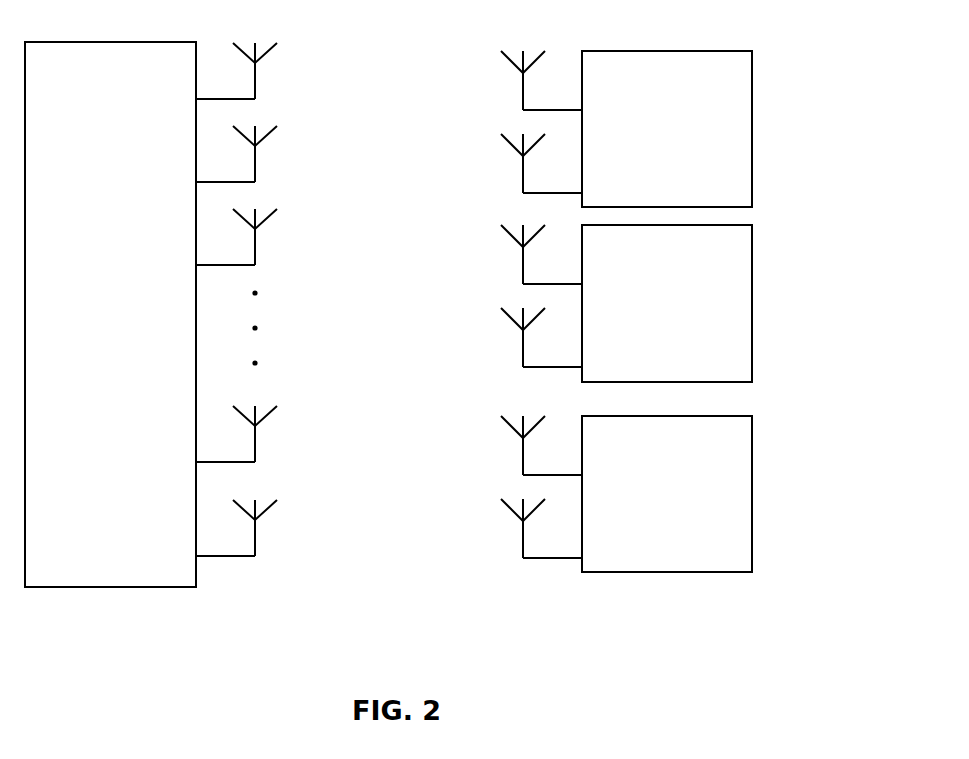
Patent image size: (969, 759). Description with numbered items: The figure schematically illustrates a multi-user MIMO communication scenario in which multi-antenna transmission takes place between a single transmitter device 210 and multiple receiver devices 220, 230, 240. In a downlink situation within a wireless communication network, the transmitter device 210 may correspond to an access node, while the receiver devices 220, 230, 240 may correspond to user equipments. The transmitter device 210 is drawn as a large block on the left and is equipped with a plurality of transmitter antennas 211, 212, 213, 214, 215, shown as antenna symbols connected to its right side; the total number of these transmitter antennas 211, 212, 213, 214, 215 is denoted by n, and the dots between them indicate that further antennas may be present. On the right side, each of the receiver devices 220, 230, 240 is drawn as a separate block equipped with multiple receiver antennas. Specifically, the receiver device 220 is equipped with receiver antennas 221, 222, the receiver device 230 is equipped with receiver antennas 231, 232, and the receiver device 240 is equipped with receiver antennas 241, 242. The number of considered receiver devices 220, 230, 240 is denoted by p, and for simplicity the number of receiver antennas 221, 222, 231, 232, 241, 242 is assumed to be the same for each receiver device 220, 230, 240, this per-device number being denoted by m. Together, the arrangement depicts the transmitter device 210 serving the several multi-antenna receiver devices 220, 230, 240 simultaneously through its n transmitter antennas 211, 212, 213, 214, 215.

The transmitter device 210 is at (114, 587).
The transmitter antenna 211 is at (255, 77).
The transmitter antenna 212 is at (255, 160).
The transmitter antenna 213 is at (255, 243).
The transmitter antenna 214 is at (255, 440).
The transmitter antenna 215 is at (255, 534).
The receiver device 220 is at (752, 126).
The receiver antenna 221 is at (523, 92).
The receiver antenna 222 is at (523, 175).
The receiver device 230 is at (752, 301).
The receiver antenna 231 is at (523, 266).
The receiver antenna 232 is at (523, 349).
The receiver device 240 is at (752, 490).
The receiver antenna 241 is at (523, 457).
The receiver antenna 242 is at (523, 540).